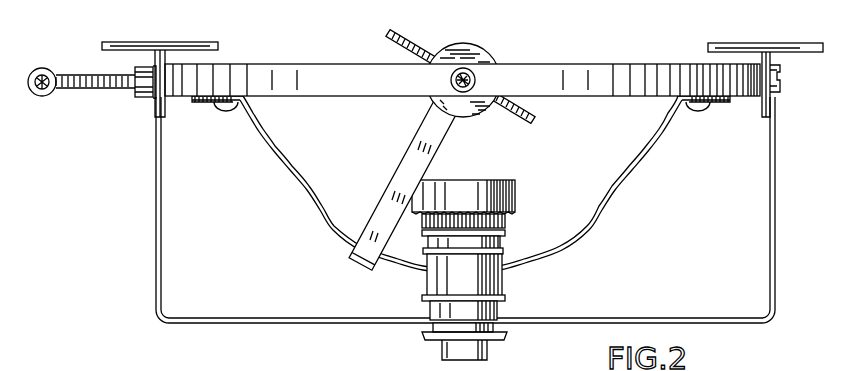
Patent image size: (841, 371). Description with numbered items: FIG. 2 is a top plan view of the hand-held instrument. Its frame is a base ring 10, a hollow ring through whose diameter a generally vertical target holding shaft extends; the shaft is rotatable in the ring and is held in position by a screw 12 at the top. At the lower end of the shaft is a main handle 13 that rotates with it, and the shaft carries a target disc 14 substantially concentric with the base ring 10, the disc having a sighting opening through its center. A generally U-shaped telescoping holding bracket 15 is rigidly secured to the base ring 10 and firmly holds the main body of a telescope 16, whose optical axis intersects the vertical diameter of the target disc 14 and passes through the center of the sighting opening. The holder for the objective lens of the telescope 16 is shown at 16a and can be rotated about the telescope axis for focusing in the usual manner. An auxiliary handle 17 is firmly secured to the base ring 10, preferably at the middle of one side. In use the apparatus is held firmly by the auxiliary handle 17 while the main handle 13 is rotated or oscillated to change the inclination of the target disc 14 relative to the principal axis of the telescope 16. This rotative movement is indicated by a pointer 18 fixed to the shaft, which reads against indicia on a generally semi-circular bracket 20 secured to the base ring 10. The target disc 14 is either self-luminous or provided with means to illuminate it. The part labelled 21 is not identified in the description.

The base ring 10 is at (256, 72).
The screw 12 is at (476, 80).
The main handle 13 is at (478, 56).
The target disc 14 is at (412, 46).
The telescoping holding bracket 15 is at (228, 323).
The telescope 16 is at (500, 306).
The objective lens holder 16a is at (516, 190).
The auxiliary handle 17 is at (43, 68).
The pointer 18 is at (437, 133).
The semi-circular bracket 20 is at (289, 172).
The mounting bracket 21 is at (155, 42).